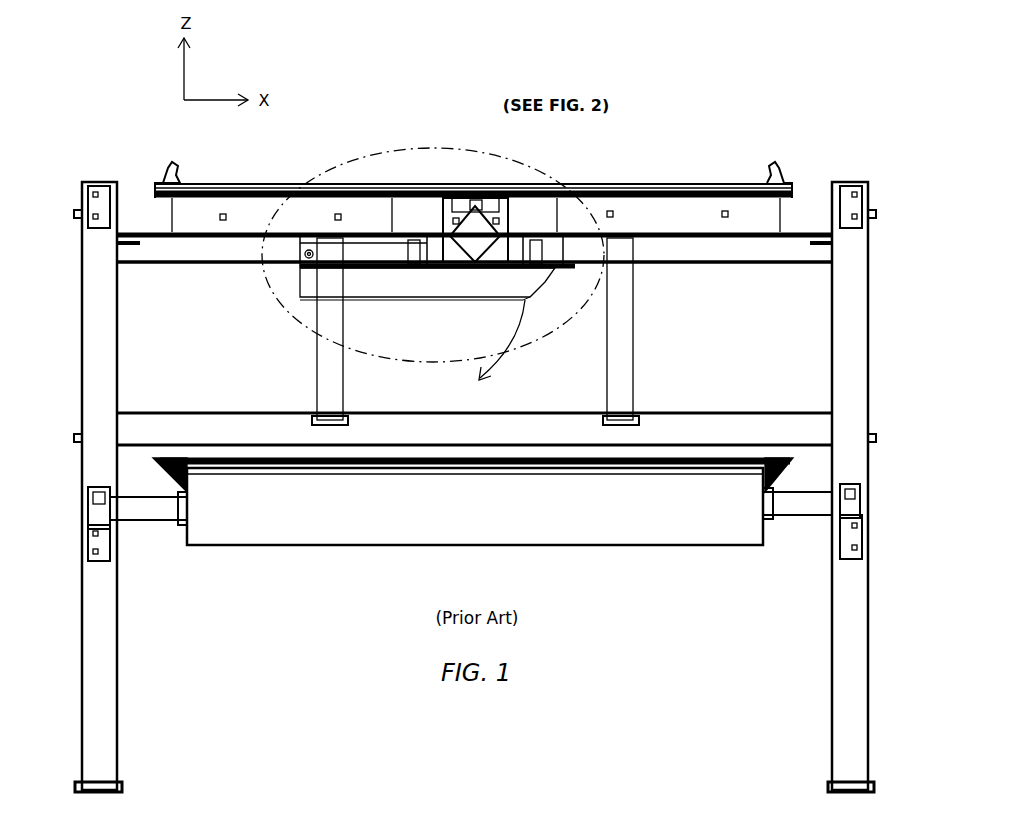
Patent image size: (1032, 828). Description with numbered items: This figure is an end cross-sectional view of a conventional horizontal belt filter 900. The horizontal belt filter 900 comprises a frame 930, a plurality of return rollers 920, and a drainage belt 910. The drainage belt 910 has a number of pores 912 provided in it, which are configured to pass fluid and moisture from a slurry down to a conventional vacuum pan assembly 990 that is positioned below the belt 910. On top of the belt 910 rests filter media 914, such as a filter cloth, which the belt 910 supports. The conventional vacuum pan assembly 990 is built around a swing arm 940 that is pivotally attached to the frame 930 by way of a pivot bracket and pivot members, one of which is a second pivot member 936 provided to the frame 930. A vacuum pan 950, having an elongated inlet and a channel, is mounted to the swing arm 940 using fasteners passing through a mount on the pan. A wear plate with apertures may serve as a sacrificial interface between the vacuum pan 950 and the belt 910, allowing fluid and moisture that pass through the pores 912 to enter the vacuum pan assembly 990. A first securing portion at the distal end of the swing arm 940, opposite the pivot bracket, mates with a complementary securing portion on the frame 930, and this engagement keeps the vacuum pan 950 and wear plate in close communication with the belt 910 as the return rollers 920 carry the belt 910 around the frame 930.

The horizontal belt filter 900 is at (745, 82).
The drainage belt 910 is at (650, 190).
The pores 912 is at (472, 196).
The filter media 914 is at (238, 190).
The return rollers 920 is at (474, 506).
The frame 930 is at (90, 363).
The second pivot member 936 is at (306, 258).
The swing arm 940 is at (431, 263).
The vacuum pan 950 is at (488, 270).
The conventional vacuum pan assembly 990 is at (412, 322).